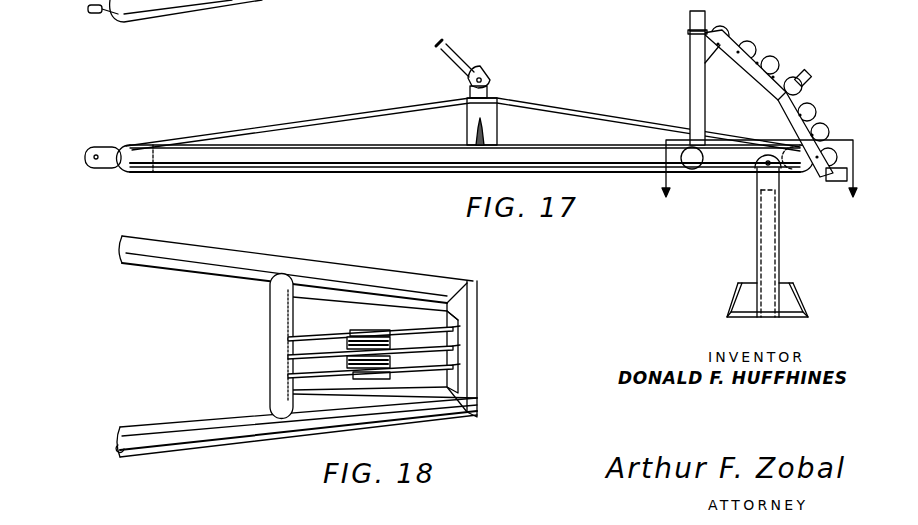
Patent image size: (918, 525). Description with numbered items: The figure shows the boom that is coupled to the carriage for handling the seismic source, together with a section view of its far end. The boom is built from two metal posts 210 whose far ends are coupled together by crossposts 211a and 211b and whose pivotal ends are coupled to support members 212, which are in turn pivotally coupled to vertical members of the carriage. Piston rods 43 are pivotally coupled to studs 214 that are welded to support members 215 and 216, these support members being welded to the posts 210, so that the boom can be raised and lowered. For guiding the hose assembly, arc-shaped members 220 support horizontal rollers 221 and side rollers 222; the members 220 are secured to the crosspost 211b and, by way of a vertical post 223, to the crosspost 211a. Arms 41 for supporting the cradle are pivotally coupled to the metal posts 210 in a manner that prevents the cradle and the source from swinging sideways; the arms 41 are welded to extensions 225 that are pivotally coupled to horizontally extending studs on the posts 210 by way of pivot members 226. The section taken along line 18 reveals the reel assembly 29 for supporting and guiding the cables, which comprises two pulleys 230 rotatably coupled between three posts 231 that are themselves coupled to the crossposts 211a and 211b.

In FIG. 17, the metal post 210 is at (432, 146).
In FIG. 17, the support member 212 is at (113, 146).
In FIG. 17, the support member 216 is at (362, 104).
In FIG. 17, the support member 215 is at (498, 126).
In FIG. 17, the stud 214 is at (490, 90).
In FIG. 17, the piston rod 43 is at (458, 58).
In FIG. 17, the horizontal roller 221 is at (763, 57).
In FIG. 17, the arc-shaped member 220 is at (760, 86).
In FIG. 17, the vertical post 223 is at (690, 89).
In FIG. 17, the side roller 222 is at (706, 18).
In FIG. 17, the section line 18- 18 is at (761, 180).
In FIG. 17, the extension 225 is at (757, 168).
In FIG. 17, the pivot member 226 is at (782, 173).
In FIG. 17, the arm 41 is at (757, 251).
In FIG. 18, the crosspost 211b is at (478, 292).
In FIG. 18, the crosspost 211a is at (270, 366).
In FIG. 18, the post 231 is at (456, 367).
In FIG. 18, the pulley 230 is at (396, 362).
In FIG. 18, the reel assembly 29 is at (338, 353).